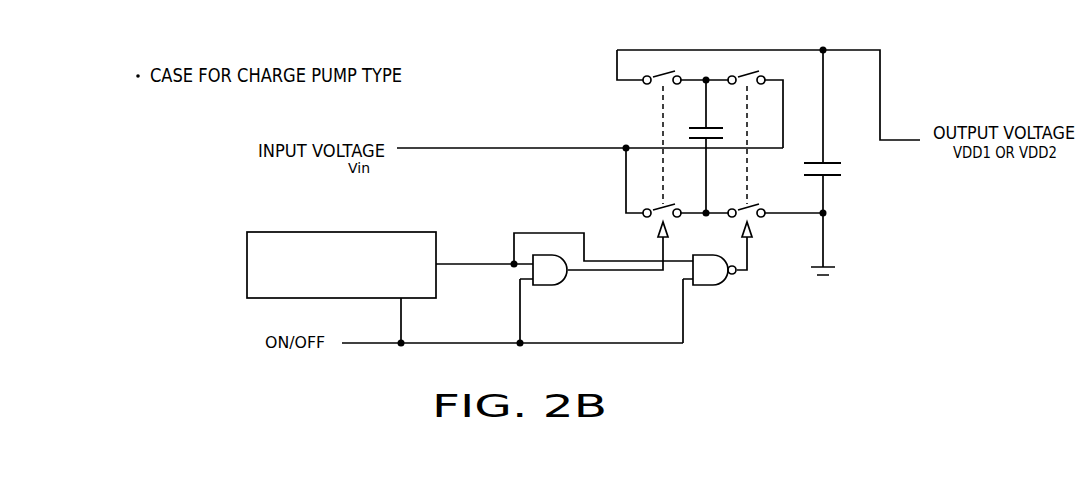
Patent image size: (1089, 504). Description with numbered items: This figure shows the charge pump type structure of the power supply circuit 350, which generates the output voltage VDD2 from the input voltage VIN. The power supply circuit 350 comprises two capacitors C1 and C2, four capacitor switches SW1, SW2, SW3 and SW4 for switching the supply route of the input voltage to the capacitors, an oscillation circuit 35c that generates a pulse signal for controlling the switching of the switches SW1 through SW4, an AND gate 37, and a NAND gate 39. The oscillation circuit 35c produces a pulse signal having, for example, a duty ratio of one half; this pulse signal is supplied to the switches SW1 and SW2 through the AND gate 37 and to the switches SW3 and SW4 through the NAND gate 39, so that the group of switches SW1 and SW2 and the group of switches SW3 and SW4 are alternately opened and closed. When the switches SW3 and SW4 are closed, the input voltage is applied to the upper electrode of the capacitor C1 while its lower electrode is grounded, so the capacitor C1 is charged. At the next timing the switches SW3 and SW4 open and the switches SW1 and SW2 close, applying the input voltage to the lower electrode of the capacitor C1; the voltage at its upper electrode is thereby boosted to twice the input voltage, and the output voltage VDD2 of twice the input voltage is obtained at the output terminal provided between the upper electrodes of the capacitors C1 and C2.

The capacitor switch SW1 is at (662, 68).
The capacitor switch SW2 is at (652, 221).
The capacitor switch SW3 is at (744, 68).
The capacitor switch SW4 is at (750, 222).
The capacitor C1 is at (692, 127).
The capacitor C2 is at (834, 179).
The oscillation circuit 35c is at (386, 232).
The AND gate 37 is at (566, 284).
The NAND gate 39 is at (726, 284).
The power supply circuit 350 is at (937, 351).